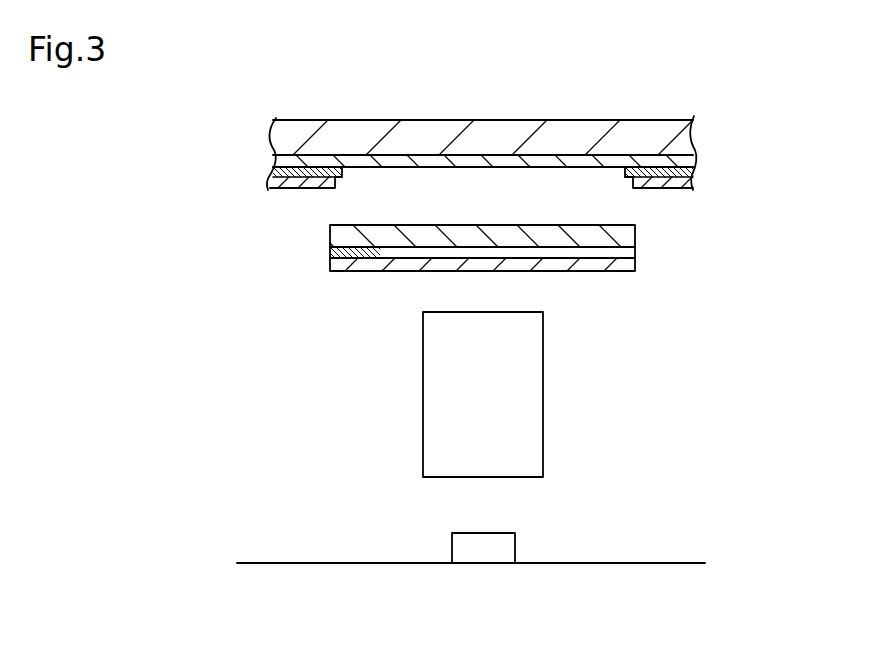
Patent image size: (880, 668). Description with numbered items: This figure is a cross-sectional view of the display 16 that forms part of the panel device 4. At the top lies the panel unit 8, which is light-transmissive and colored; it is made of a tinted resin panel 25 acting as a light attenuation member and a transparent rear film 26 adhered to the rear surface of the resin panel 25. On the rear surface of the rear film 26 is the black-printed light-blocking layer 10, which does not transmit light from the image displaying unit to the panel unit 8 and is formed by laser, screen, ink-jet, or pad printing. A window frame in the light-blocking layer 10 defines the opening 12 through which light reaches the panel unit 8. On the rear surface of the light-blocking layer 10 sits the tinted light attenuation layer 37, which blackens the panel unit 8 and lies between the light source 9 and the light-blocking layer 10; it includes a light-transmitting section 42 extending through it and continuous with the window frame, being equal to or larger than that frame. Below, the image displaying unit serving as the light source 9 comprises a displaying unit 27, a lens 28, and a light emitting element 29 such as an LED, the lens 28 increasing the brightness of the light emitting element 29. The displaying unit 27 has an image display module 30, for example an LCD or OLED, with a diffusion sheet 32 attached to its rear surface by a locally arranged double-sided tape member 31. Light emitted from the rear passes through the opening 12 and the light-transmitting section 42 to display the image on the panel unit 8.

The panel device 4 is at (236, 584).
The panel unit 8 is at (482, 111).
The light source 9 is at (560, 394).
The light-blocking layer 10 is at (302, 188).
The opening 12 is at (628, 173).
The display 16 is at (480, 129).
The resin panel 25 is at (384, 120).
The rear film 26 is at (372, 84).
The displaying unit 27 is at (424, 273).
The lens 28 is at (423, 393).
The light emitting element 29 is at (452, 550).
The image display module 30 is at (330, 233).
The tape member 31 is at (330, 253).
The diffusion sheet 32 is at (345, 272).
The light attenuation layer 37 is at (316, 188).
The light-transmitting section 42 is at (344, 177).